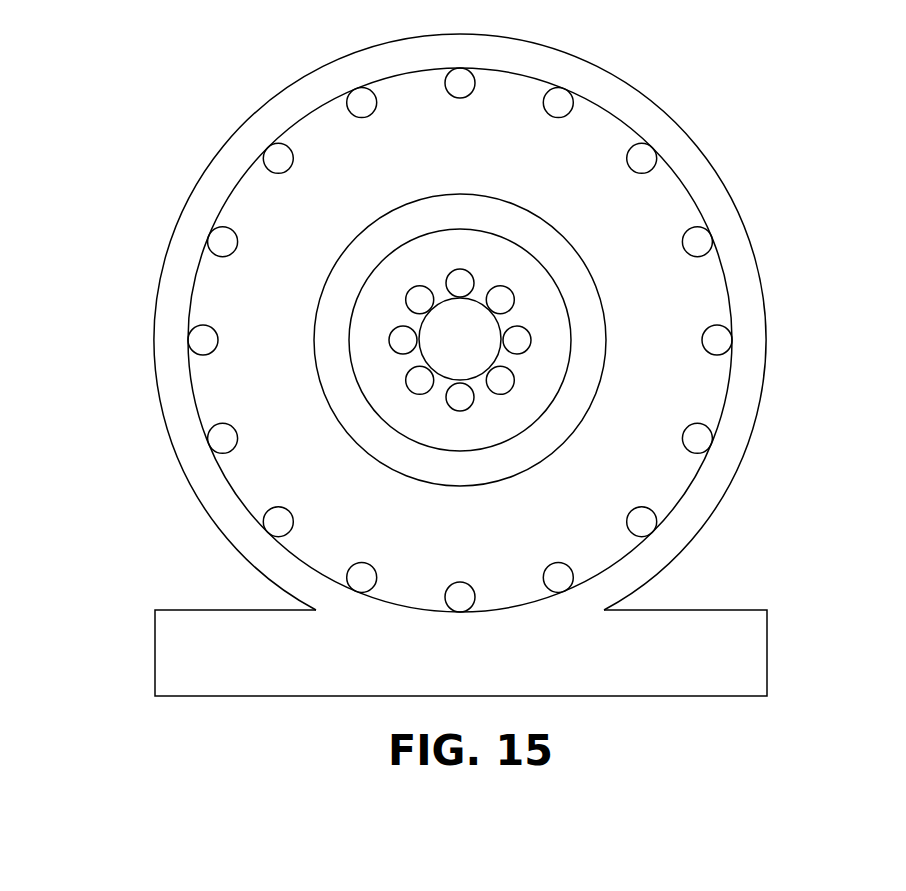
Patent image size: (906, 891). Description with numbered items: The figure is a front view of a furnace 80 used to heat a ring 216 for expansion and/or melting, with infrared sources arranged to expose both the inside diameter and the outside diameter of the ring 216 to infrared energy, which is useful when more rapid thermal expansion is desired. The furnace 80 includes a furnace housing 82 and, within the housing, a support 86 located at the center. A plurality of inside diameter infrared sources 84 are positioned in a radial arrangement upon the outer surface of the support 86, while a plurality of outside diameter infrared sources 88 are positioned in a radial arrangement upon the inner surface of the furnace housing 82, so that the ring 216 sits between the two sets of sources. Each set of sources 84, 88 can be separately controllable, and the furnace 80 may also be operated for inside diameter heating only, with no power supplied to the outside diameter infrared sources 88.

The furnace 80 is at (708, 98).
The furnace housing 82 is at (278, 92).
The inside diameter infrared sources 84 is at (528, 338).
The support 86 is at (502, 357).
The outside diameter infrared sources 88 is at (193, 342).
The ring 216 is at (330, 407).